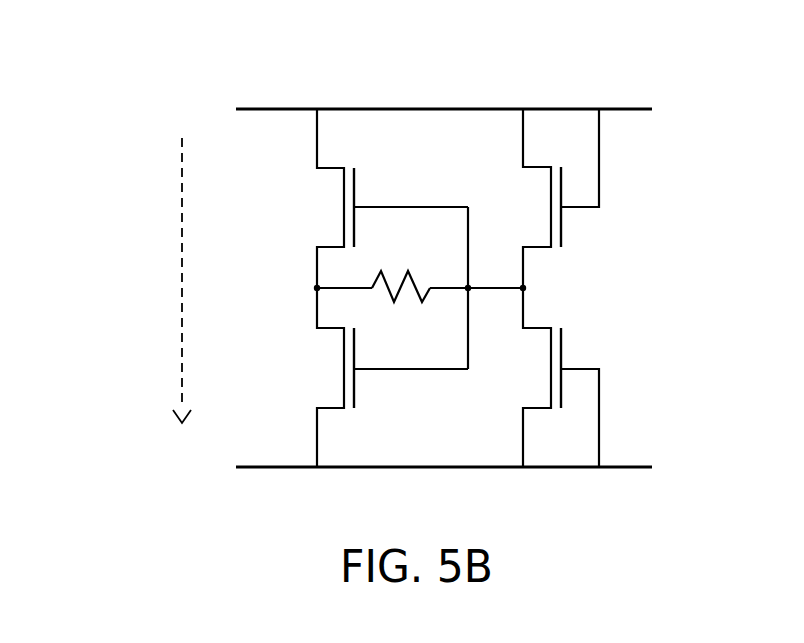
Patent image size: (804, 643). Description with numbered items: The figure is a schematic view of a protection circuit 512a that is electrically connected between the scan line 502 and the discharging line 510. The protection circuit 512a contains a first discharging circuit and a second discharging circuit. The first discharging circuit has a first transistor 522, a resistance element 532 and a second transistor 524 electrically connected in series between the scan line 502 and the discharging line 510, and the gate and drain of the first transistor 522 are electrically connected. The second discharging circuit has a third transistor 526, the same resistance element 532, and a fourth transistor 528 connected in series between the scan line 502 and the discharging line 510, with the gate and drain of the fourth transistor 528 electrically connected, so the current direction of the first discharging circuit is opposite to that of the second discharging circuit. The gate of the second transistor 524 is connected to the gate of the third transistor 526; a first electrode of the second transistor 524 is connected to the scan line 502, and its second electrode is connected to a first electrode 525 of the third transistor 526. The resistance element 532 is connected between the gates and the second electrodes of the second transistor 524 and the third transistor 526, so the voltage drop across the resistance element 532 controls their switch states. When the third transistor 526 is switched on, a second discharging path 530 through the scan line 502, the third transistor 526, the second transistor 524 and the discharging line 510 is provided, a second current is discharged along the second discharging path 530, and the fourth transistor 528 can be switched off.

The protection circuit 512a is at (102, 63).
The scan line 502 is at (278, 108).
The discharging line 510 is at (278, 470).
The first transistor 522 is at (578, 222).
The second transistor 524 is at (321, 363).
The first electrode of the third transistor 525 is at (314, 267).
The third transistor 526 is at (321, 210).
The fourth transistor 528 is at (567, 360).
The second discharging path 530 is at (178, 278).
The resistance element 532 is at (393, 266).